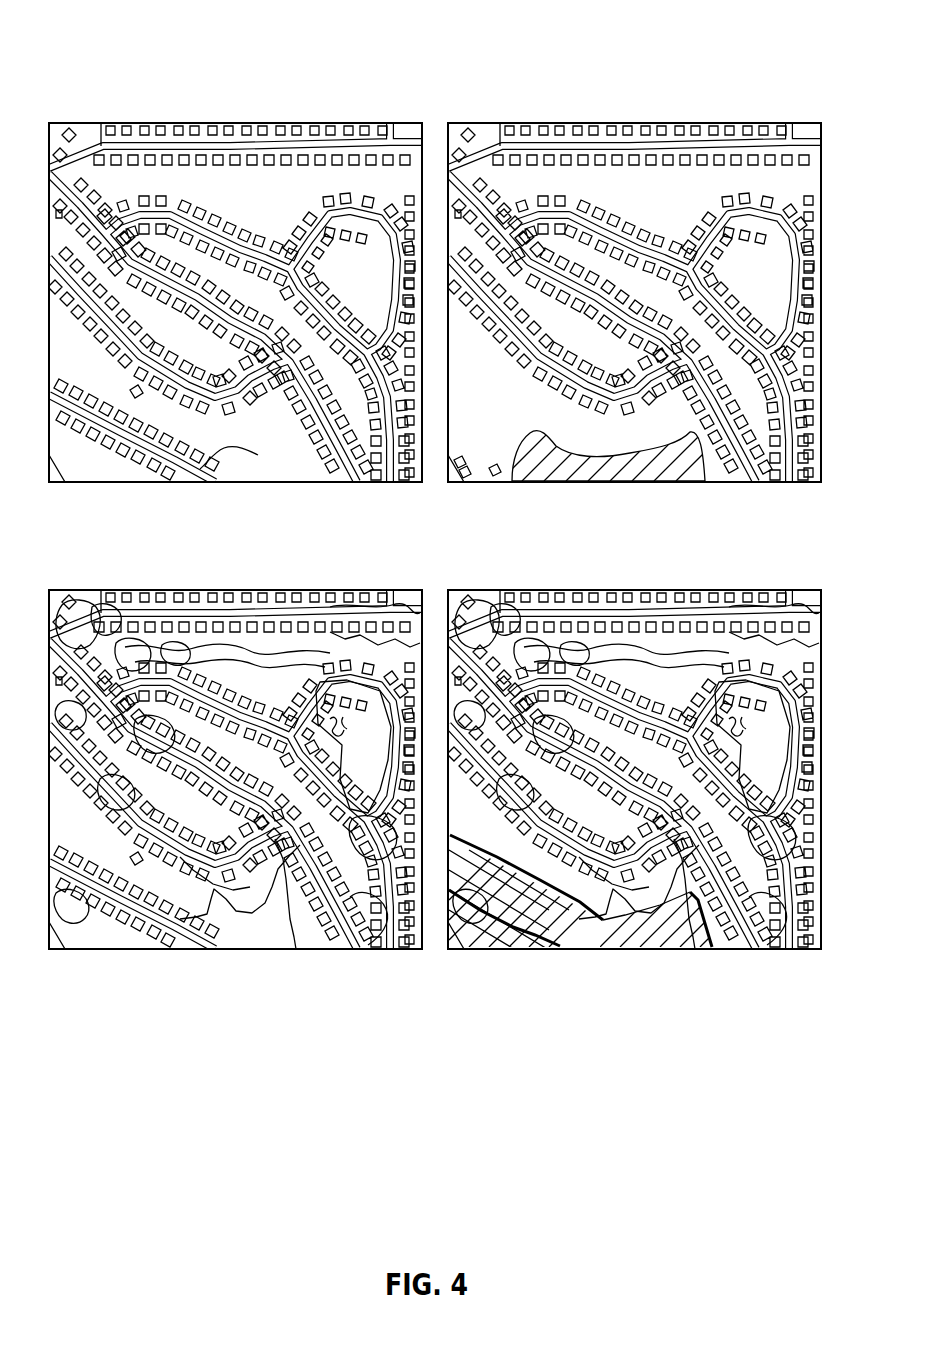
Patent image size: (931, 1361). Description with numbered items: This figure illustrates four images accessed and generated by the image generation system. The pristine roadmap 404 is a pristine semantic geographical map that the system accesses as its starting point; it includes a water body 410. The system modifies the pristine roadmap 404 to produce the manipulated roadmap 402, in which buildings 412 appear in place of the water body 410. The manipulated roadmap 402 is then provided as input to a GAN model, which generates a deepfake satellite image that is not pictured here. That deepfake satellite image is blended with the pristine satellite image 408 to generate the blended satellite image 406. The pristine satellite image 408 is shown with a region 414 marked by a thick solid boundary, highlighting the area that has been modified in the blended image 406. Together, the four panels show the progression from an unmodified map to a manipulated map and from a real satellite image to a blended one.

The manipulated roadmap 402 is at (192, 124).
The pristine roadmap 404 is at (647, 124).
The blended satellite image 406 is at (92, 948).
The pristine satellite image 408 is at (470, 948).
The water body 410 is at (509, 481).
The buildings 412 is at (247, 456).
The region 414 is at (712, 947).